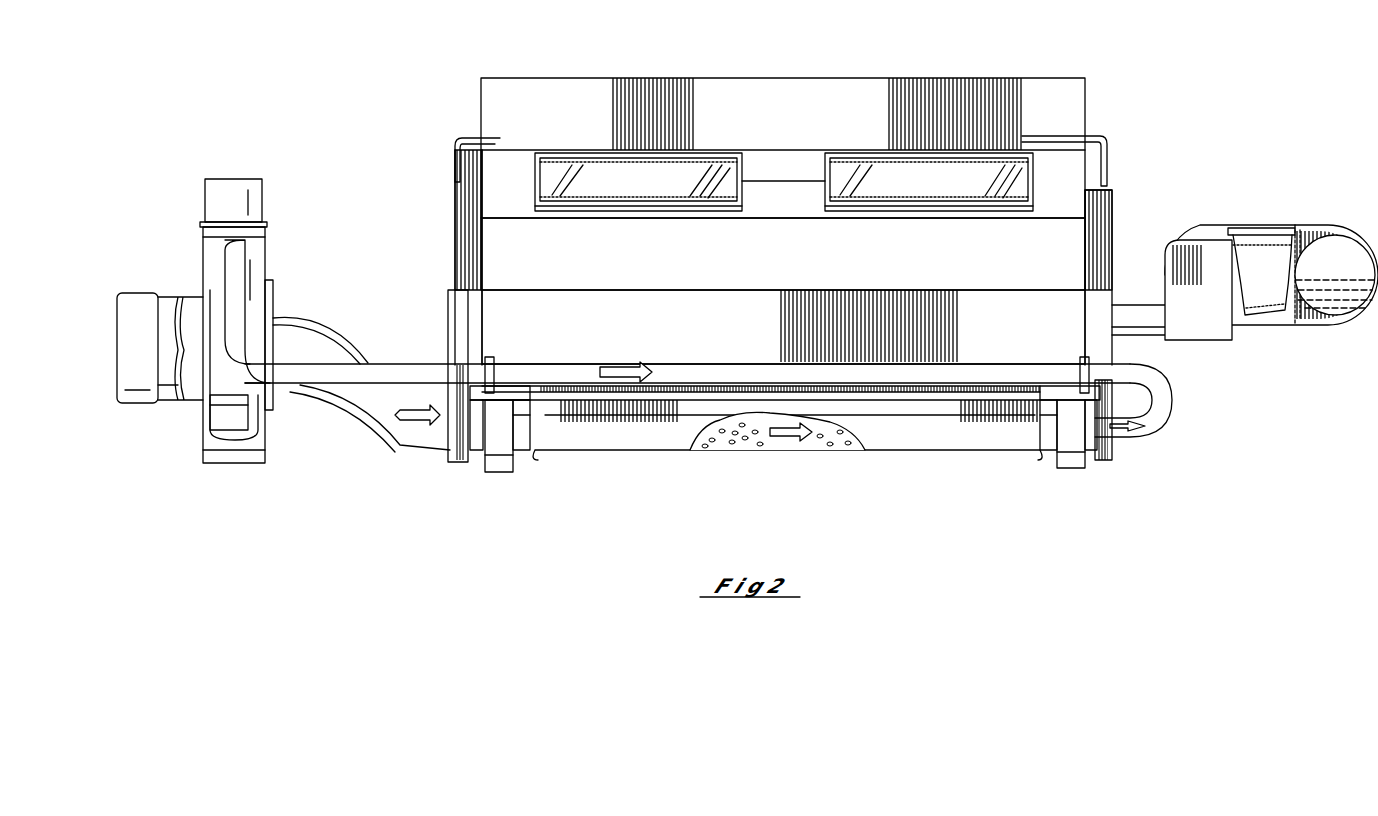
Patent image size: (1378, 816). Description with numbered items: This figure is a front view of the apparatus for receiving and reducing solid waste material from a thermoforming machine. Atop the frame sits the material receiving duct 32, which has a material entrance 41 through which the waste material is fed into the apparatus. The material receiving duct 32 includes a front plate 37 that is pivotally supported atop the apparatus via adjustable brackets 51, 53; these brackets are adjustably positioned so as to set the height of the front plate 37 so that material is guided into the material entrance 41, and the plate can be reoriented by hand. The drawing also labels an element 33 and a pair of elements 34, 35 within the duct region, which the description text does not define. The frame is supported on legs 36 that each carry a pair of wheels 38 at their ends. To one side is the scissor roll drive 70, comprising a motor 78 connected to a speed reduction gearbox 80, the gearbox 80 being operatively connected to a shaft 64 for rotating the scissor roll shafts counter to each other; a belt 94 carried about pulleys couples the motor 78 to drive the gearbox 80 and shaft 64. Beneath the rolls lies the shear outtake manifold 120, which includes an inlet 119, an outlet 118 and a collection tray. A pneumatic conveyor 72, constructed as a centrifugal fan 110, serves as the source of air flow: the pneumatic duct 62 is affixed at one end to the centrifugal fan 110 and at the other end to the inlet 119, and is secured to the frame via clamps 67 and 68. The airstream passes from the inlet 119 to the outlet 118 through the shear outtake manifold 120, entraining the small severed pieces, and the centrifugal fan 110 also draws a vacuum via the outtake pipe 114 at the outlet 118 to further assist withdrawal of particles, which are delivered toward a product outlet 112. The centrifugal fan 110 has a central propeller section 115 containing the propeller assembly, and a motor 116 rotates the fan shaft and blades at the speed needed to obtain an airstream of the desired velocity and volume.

The material receiving duct 32 is at (467, 95).
The base plate 33 is at (783, 259).
The left window panel 34 is at (587, 170).
The right window panel 35 is at (893, 172).
The legs 36 is at (482, 455).
The front plate 37 is at (780, 118).
The wheels 38 is at (500, 470).
The material entrance 41 is at (766, 58).
The adjustable bracket 51 is at (458, 166).
The adjustable bracket 53 is at (1112, 156).
The pneumatic duct 62 is at (578, 363).
The shaft 64 is at (1120, 305).
The clamp 67 is at (1083, 358).
The clamp 68 is at (489, 360).
The scissor roll drive 70 is at (1292, 205).
The pneumatic conveyor 72 is at (200, 485).
The motor 78 is at (1346, 277).
The speed reduction gearbox 80 is at (1222, 318).
The belt 94 is at (1258, 235).
The centrifugal fan 110 is at (270, 253).
The product outlet 112 is at (237, 177).
The outtake pipe 114 is at (320, 345).
The central propeller section 115 is at (208, 408).
The motor 116 is at (192, 293).
The outlet 118 is at (452, 455).
The inlet 119 is at (1098, 447).
The shear outtake manifold 120 is at (702, 452).